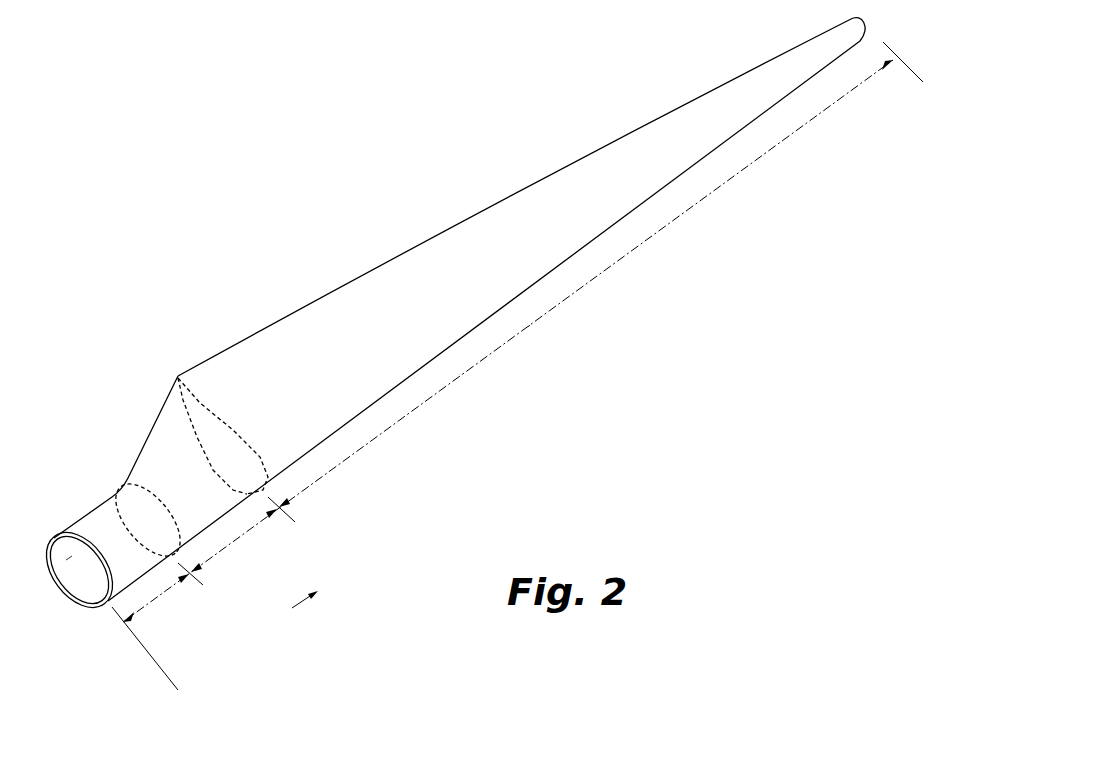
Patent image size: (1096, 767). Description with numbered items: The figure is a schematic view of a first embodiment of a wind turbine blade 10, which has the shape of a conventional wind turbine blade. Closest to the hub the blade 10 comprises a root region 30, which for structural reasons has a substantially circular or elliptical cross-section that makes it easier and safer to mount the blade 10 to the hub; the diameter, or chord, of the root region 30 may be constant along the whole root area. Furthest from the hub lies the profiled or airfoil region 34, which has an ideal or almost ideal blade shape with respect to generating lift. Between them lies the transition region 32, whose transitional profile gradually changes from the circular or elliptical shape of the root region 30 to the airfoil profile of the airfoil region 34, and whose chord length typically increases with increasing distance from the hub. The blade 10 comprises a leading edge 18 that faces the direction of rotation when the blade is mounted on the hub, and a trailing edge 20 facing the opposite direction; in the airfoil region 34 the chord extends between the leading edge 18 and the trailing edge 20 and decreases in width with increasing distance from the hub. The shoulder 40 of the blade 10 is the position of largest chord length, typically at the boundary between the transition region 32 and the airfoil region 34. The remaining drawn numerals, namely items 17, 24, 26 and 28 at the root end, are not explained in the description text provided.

The wind turbine blade 10 is at (478, 354).
The interior cavity 17 is at (70, 558).
The leading edge 18 is at (615, 224).
The trailing edge 20 is at (507, 196).
The root section 24 is at (72, 528).
The root end 26 is at (82, 603).
The blade shell 28 is at (64, 532).
The root region 30 is at (158, 585).
The transition region 32 is at (235, 533).
The airfoil region 34 is at (528, 327).
The shoulder 40 is at (178, 378).